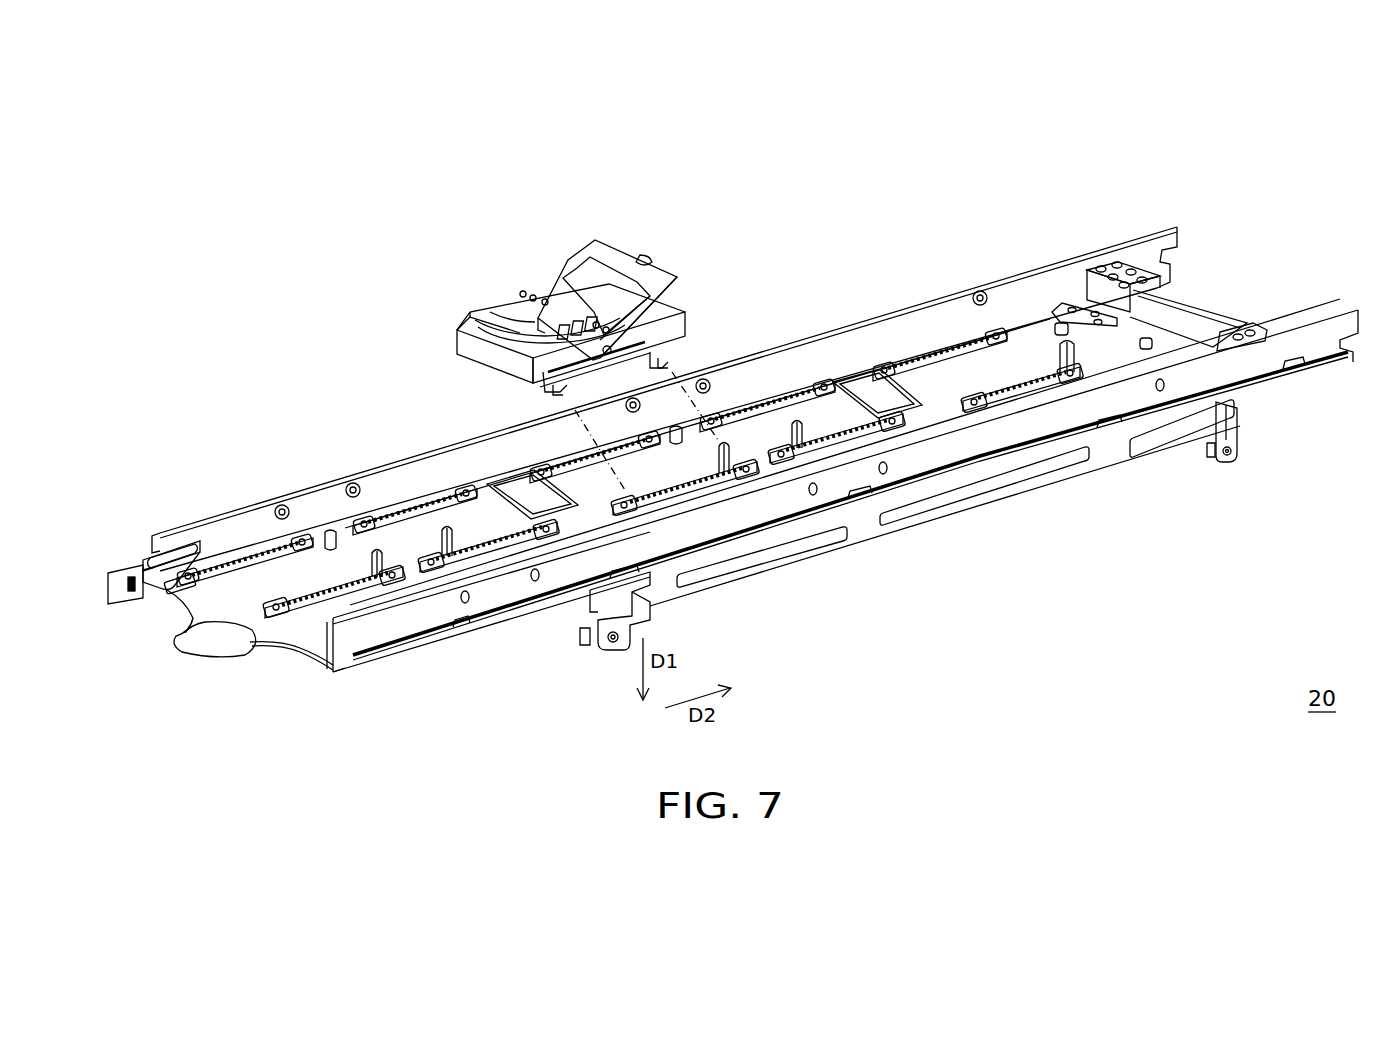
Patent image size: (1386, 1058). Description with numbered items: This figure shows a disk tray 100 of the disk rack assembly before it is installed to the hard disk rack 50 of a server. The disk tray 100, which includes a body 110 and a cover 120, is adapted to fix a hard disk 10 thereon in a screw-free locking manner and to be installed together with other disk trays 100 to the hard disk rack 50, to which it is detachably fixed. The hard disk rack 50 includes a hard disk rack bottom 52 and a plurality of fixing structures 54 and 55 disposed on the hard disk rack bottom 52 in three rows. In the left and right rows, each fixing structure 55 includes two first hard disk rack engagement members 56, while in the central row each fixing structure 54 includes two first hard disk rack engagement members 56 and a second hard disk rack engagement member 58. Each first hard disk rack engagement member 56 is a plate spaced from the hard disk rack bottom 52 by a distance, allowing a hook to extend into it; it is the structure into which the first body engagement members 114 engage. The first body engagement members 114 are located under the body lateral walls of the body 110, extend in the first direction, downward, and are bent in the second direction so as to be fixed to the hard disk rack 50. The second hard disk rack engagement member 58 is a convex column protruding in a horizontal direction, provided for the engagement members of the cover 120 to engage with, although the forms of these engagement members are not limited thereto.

The hard disk 10 is at (487, 357).
The hard disk rack 50 is at (1203, 245).
The hard disk rack bottom 52 is at (303, 663).
The fixing structure 54 is at (266, 626).
The fixing structure 55 is at (192, 591).
The first hard disk rack engagement member 56 is at (287, 540).
The second hard disk rack engagement member 58 is at (377, 553).
The disk tray 100 is at (688, 250).
The body 110 is at (705, 316).
The first body engagement member 114 is at (558, 395).
The cover 120 is at (585, 258).